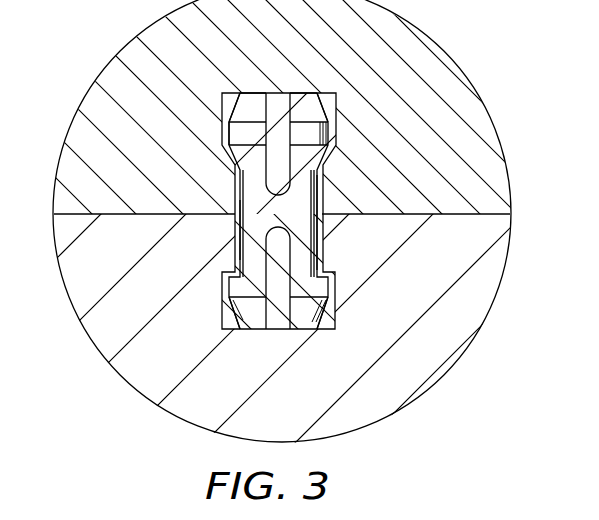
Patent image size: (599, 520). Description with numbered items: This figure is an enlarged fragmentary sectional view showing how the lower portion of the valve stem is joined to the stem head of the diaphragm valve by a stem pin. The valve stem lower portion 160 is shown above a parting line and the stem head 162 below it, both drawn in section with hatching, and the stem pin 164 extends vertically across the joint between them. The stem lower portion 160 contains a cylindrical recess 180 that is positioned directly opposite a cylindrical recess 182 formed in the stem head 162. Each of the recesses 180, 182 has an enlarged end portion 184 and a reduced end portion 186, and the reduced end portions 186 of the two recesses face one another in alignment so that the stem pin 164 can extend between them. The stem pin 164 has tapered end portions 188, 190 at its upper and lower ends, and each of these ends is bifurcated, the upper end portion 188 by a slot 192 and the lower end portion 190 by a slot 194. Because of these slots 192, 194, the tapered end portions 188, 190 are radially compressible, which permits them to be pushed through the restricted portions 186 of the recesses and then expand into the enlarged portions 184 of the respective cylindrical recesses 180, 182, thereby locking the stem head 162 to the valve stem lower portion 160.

The valve stem lower portion 160 is at (113, 70).
The stem head 162 is at (147, 377).
The stem pin 164 is at (283, 218).
The cylindrical recess 180 is at (226, 128).
The cylindrical recess 182 is at (236, 229).
The enlarged end portion 184 is at (250, 90).
The reduced end portion 186 is at (326, 193).
The tapered end portion 188 is at (304, 104).
The tapered end portion 190 is at (321, 303).
The slot 192 is at (281, 100).
The slot 194 is at (292, 310).